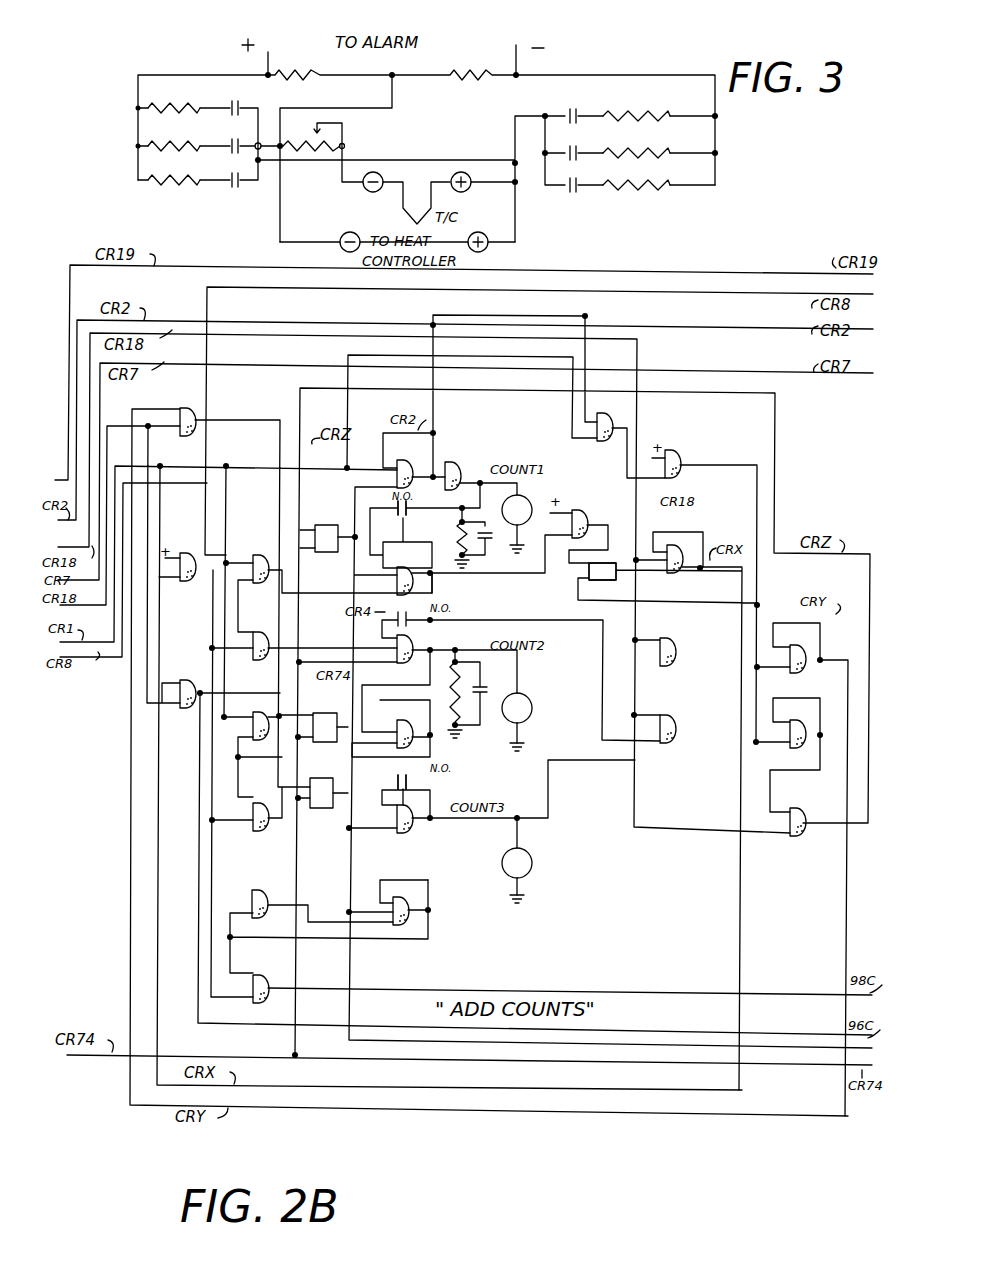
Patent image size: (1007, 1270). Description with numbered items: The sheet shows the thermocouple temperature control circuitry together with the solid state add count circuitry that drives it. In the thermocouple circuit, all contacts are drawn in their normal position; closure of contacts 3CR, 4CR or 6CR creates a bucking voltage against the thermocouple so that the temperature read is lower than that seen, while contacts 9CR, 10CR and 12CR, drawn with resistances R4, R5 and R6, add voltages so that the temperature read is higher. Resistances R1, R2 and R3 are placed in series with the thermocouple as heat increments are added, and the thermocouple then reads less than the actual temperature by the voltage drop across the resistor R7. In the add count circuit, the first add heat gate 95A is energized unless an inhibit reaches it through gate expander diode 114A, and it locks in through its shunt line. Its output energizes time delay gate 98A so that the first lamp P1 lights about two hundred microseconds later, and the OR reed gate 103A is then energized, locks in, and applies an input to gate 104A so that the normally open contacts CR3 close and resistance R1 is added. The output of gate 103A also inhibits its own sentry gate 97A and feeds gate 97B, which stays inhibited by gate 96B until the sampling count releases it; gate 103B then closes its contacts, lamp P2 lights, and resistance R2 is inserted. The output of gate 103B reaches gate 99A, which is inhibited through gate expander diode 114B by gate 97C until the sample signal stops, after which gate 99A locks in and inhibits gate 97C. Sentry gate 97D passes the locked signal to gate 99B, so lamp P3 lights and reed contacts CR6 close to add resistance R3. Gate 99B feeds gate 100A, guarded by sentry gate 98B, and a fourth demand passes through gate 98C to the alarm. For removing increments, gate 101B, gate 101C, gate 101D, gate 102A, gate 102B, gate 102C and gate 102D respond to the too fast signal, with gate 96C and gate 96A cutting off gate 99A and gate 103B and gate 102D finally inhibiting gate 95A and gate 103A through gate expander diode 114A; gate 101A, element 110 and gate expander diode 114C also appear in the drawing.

In FIG. 3, the resistance R1 is at (184, 98).
In FIG. 3, the resistance R2 is at (186, 136).
In FIG. 3, the resistance R3 is at (186, 170).
In FIG. 3, the resistor R4 is at (664, 106).
In FIG. 3, the resistor R5 is at (662, 144).
In FIG. 3, the resistor R6 is at (662, 176).
In FIG. 3, the resistor R7 is at (316, 162).
In FIG. 3, the contacts 3CR is at (250, 98).
In FIG. 3, the contacts 4CR is at (252, 136).
In FIG. 3, the contacts 6CR is at (250, 170).
In FIG. 3, the contacts 9CR is at (590, 106).
In FIG. 3, the contacts 10CR is at (595, 144).
In FIG. 3, the contacts 12CR is at (595, 176).
In FIG. 2B, the first add heat gate 95A is at (414, 460).
In FIG. 2B, the gate 96A is at (196, 402).
In FIG. 2B, the gate 96B is at (196, 550).
In FIG. 2B, the gate 96C is at (196, 676).
In FIG. 2B, the sentry gate 97A is at (272, 540).
In FIG. 2B, the gate 97B is at (272, 628).
In FIG. 2B, the if gate 97C is at (272, 700).
In FIG. 2B, the sentry gate 97D is at (272, 800).
In FIG. 2B, the time delay gate 98A is at (470, 458).
In FIG. 2B, the sentry gate 98B is at (274, 875).
In FIG. 2B, the gate 98C is at (272, 972).
In FIG. 2B, the gate 99A is at (412, 712).
In FIG. 2B, the gate 99B is at (424, 826).
In FIG. 2B, the gate 100A is at (416, 888).
In FIG. 2B, the logic gate 101A is at (620, 404).
In FIG. 2B, the gate 101B is at (678, 466).
In FIG. 2B, the gate 101C is at (678, 576).
In FIG. 2B, the gate 101D is at (680, 664).
In FIG. 2B, the gate 102A is at (682, 742).
In FIG. 2B, the gate 102B is at (794, 668).
In FIG. 2B, the gate 102C is at (810, 710).
In FIG. 2B, the gate 102D is at (794, 806).
In FIG. 2B, the OR reed gate 103A is at (424, 588).
In FIG. 2B, the gate 103B is at (416, 640).
In FIG. 2B, the gate 104A is at (588, 520).
In FIG. 2B, the delay element 110 is at (618, 582).
In FIG. 2B, the gate expander diode 114A is at (327, 527).
In FIG. 2B, the gate expander diode 114B is at (321, 716).
In FIG. 2B, the one-shot element 114C is at (321, 784).
In FIG. 2B, the first lamp P1 is at (517, 524).
In FIG. 2B, the count 2 lamp P2 is at (517, 722).
In FIG. 2B, the third add heat lamp P3 is at (517, 875).
In FIG. 2B, the normally open contacts CR3 is at (410, 514).
In FIG. 2B, the normally open reed contacts CR6 is at (412, 776).